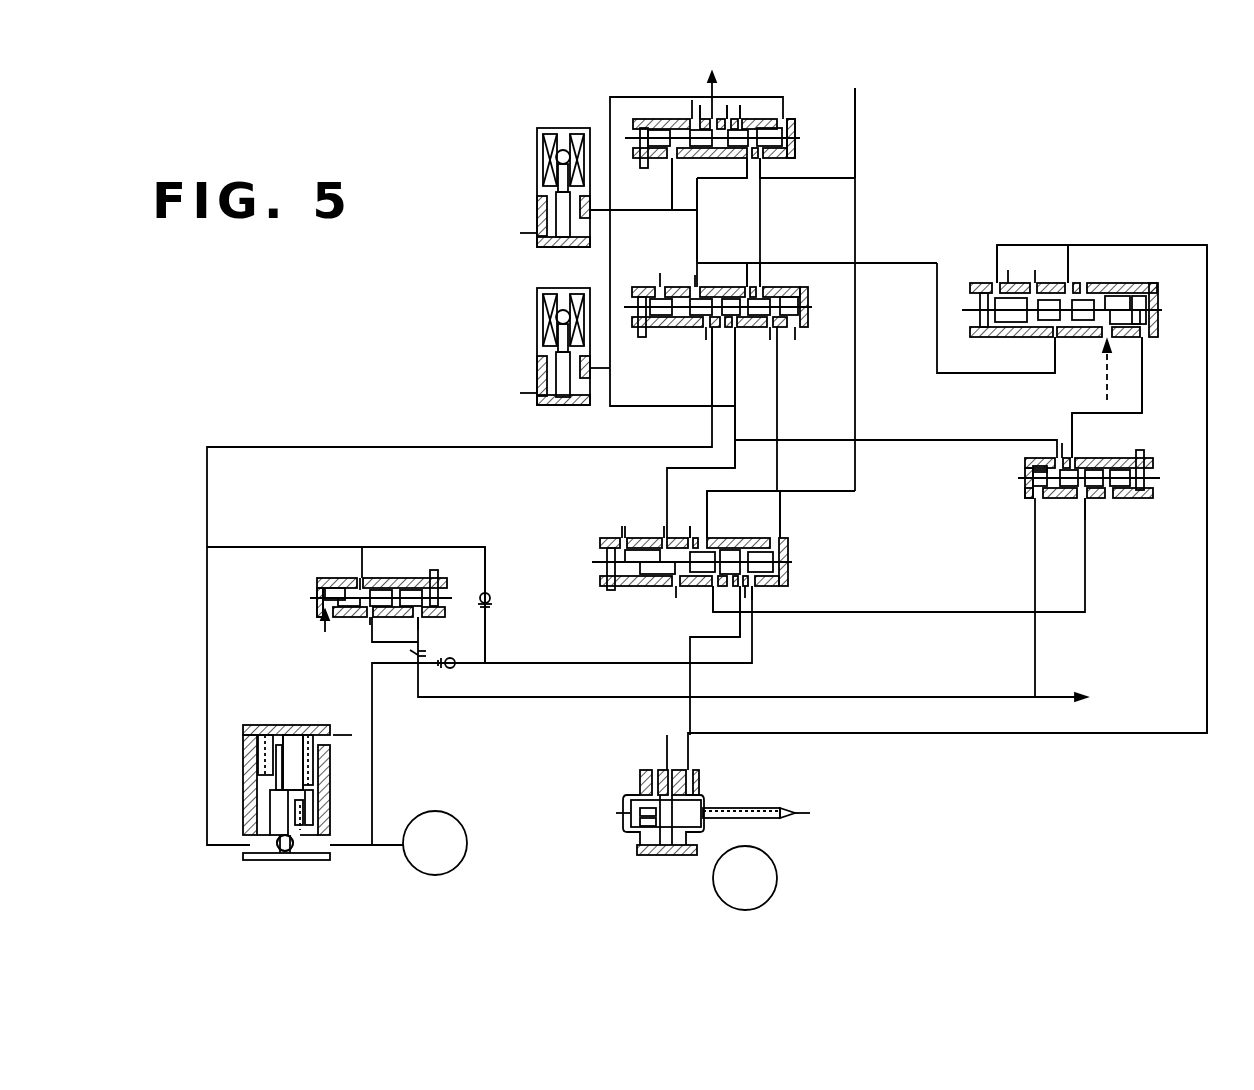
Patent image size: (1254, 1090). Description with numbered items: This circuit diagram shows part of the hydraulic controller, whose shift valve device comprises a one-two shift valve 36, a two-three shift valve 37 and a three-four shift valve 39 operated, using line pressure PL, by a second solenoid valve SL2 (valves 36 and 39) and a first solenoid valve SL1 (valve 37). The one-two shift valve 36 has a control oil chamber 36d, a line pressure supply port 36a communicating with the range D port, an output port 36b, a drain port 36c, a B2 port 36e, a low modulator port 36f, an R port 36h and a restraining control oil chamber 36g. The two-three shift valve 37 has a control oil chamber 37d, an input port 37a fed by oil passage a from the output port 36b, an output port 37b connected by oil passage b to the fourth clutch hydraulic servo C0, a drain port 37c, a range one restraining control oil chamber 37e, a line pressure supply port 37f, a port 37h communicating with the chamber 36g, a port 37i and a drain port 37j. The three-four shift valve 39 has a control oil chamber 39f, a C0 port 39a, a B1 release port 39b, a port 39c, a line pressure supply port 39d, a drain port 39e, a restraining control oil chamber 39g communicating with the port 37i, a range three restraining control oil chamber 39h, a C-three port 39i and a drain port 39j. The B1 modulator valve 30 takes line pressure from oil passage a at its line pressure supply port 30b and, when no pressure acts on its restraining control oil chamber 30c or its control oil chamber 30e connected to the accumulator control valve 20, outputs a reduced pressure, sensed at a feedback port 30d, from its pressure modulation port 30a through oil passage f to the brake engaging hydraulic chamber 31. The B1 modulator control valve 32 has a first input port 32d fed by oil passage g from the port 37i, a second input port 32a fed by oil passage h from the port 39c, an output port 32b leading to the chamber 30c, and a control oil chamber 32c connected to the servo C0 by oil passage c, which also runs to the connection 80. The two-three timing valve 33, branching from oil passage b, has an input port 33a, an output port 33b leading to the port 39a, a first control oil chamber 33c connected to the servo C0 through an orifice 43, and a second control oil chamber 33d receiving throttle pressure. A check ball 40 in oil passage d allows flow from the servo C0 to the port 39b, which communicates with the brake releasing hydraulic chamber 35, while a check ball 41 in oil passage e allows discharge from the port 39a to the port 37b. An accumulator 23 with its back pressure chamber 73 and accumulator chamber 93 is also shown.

The 1-2 shift valve 36 is at (792, 100).
The line pressure supply port 36a is at (765, 163).
The output port 36b is at (744, 163).
The drain port 36c is at (742, 108).
The control oil chamber 36d is at (793, 124).
The B2 port 36e is at (694, 107).
The low modulator port 36f is at (690, 102).
The restraining control oil chamber 36g is at (670, 164).
The R port 36h is at (727, 98).
The 2-3 shift valve 37 is at (811, 280).
The input port 37a is at (698, 280).
The output port 37b is at (704, 334).
The drain port 37c is at (706, 359).
The control oil chamber 37d is at (800, 329).
The range 1 restraining control oil chamber 37e is at (657, 280).
The line pressure supply port 37f is at (743, 280).
The port 37h is at (765, 282).
The port 37i is at (740, 345).
The drain port 37j is at (772, 340).
The B1 modulator valve 30 is at (1135, 235).
The pressure modulation port 30a is at (1073, 289).
The line pressure supply port 30b is at (1045, 340).
The restraining control oil chamber 30c is at (1142, 342).
The feedback port 30d is at (987, 273).
The control oil chamber 30e is at (1102, 342).
The B1 modulator control valve 32 is at (1150, 452).
The second input port 32a is at (1085, 500).
The output port 32b is at (1058, 445).
The control oil chamber 32c is at (1028, 503).
The first input port 32d is at (1045, 456).
The 2-3 timing valve 33 is at (421, 540).
The input port 33a is at (353, 579).
The output port 33b is at (366, 622).
The first control oil chamber 33c is at (422, 620).
The second control oil chamber 33d is at (320, 623).
The 3-4 shift valve 39 is at (793, 567).
The C0 port 39a is at (756, 588).
The B1 release port 39b is at (753, 592).
The port 39c is at (711, 592).
The line pressure supply port 39d is at (710, 540).
The drain port 39e is at (715, 592).
The control oil chamber 39f is at (780, 540).
The restraining control oil chamber 39g is at (660, 527).
The range 3 restraining control oil chamber 39h is at (622, 532).
The C3 port 39i is at (680, 527).
The drain port 39j is at (673, 594).
The check ball 40 is at (455, 668).
The check ball 41 is at (490, 597).
The orifice 43 is at (412, 659).
The accumulator 23 is at (271, 732).
The back pressure chamber 73 is at (298, 730).
The accumulator chamber 93 is at (265, 837).
The brake engaging hydraulic chamber 31 is at (631, 794).
The brake releasing hydraulic chamber 35 is at (692, 791).
The accumulator control valve 20 is at (671, 514).
The hydraulic circuit connection 80 is at (1094, 698).
The first solenoid valve SL1 is at (527, 322).
The second solenoid valve SL2 is at (527, 162).
The first brake B1 is at (745, 878).
The second brake B2 is at (714, 85).
The fourth clutch hydraulic servo C0 is at (435, 843).
The range D port D is at (860, 106).
The line pressure PL is at (731, 220).
The oil passage a is at (797, 256).
The oil passage b is at (604, 448).
The oil passage c is at (908, 698).
The oil passage d is at (590, 663).
The oil passage e is at (485, 548).
The oil passage f is at (1205, 699).
The oil passage g is at (899, 440).
The oil passage h is at (957, 613).